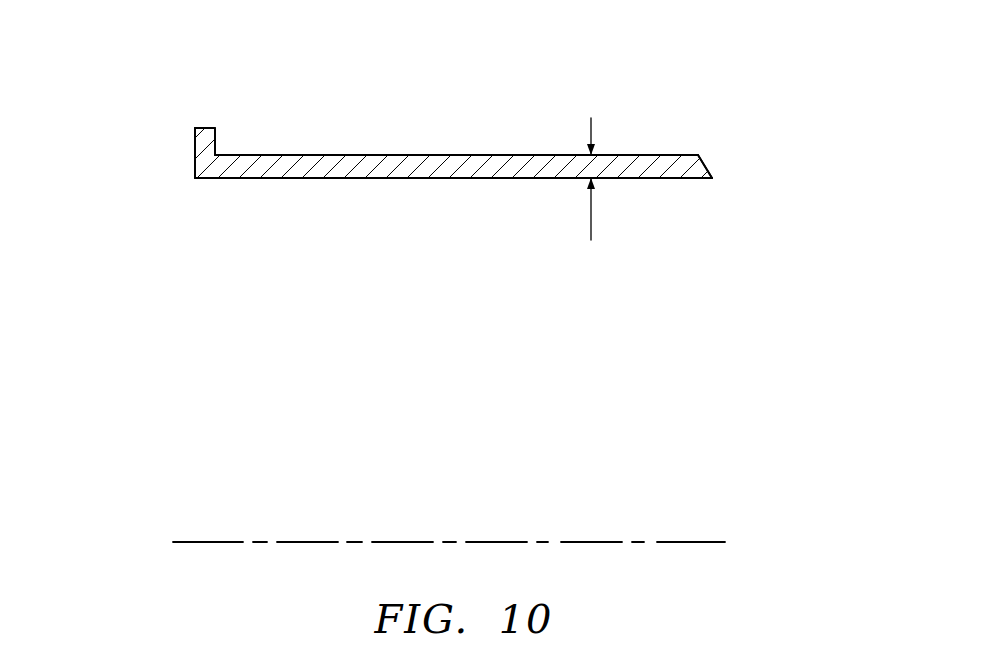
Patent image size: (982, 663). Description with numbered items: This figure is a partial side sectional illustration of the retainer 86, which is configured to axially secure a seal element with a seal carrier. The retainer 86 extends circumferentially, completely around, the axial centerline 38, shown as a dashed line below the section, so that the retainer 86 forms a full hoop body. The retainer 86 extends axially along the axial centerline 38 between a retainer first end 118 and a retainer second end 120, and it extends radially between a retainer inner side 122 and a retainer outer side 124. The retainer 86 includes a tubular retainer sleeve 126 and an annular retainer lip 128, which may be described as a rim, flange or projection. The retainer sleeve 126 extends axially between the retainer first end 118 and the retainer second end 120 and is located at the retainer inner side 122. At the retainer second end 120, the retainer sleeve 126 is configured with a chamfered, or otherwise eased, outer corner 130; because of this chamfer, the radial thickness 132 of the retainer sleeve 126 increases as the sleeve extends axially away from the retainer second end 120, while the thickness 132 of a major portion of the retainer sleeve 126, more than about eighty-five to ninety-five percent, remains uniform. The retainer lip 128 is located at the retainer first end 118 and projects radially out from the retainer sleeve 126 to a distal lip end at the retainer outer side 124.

The retainer 86 is at (435, 153).
The retainer first end 118 is at (195, 172).
The retainer second end 120 is at (712, 175).
The retainer inner side 122 is at (245, 178).
The retainer outer side 124 is at (207, 128).
The retainer sleeve 126 is at (419, 202).
The retainer lip 128 is at (176, 156).
The chamfered outer corner 130 is at (703, 160).
The thickness 132 is at (588, 197).
The axial centerline 38 is at (709, 541).